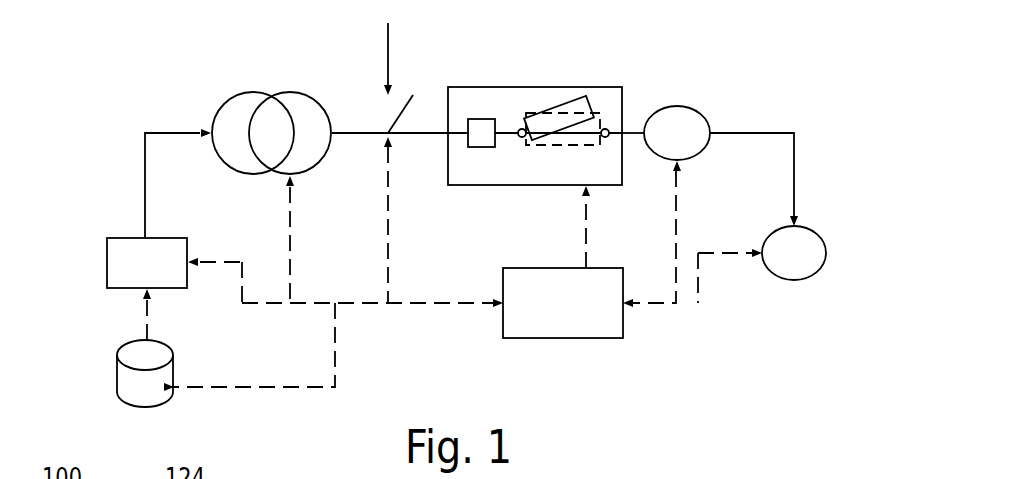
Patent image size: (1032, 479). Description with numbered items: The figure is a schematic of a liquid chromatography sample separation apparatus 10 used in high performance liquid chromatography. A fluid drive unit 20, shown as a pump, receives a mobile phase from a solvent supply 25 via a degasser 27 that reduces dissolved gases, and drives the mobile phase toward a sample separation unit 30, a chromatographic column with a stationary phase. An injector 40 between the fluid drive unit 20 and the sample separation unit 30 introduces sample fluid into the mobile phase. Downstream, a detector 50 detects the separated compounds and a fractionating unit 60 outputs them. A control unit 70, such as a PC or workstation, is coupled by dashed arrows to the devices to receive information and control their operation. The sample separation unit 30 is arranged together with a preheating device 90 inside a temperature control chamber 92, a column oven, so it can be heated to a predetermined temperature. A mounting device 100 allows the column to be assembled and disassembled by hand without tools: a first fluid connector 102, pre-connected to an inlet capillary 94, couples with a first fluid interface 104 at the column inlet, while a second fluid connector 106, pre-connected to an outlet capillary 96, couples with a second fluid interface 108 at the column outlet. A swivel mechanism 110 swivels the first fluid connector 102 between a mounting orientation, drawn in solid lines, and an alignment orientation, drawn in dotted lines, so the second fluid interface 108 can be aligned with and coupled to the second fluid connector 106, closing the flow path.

The sample separation apparatus 10 is at (727, 281).
The fluid drive unit 20 is at (272, 96).
The solvent supply 25 is at (117, 375).
The degasser 27 is at (107, 263).
The sample separation unit 30 is at (572, 98).
The injector 40 is at (388, 132).
The detector 50 is at (672, 107).
The fractionating unit 60 is at (827, 255).
The control unit 70 is at (560, 340).
The preheating device 90 is at (505, 132).
The temperature control chamber 92 is at (448, 153).
The inlet capillary 94 is at (460, 132).
The outlet capillary 96 is at (633, 132).
The mounting device 100 is at (560, 158).
The first fluid connector 102 is at (519, 137).
The first fluid interface 104 is at (526, 110).
The second fluid connector 106 is at (608, 138).
The second fluid interface 108 is at (596, 104).
The swivel mechanism 110 is at (587, 132).